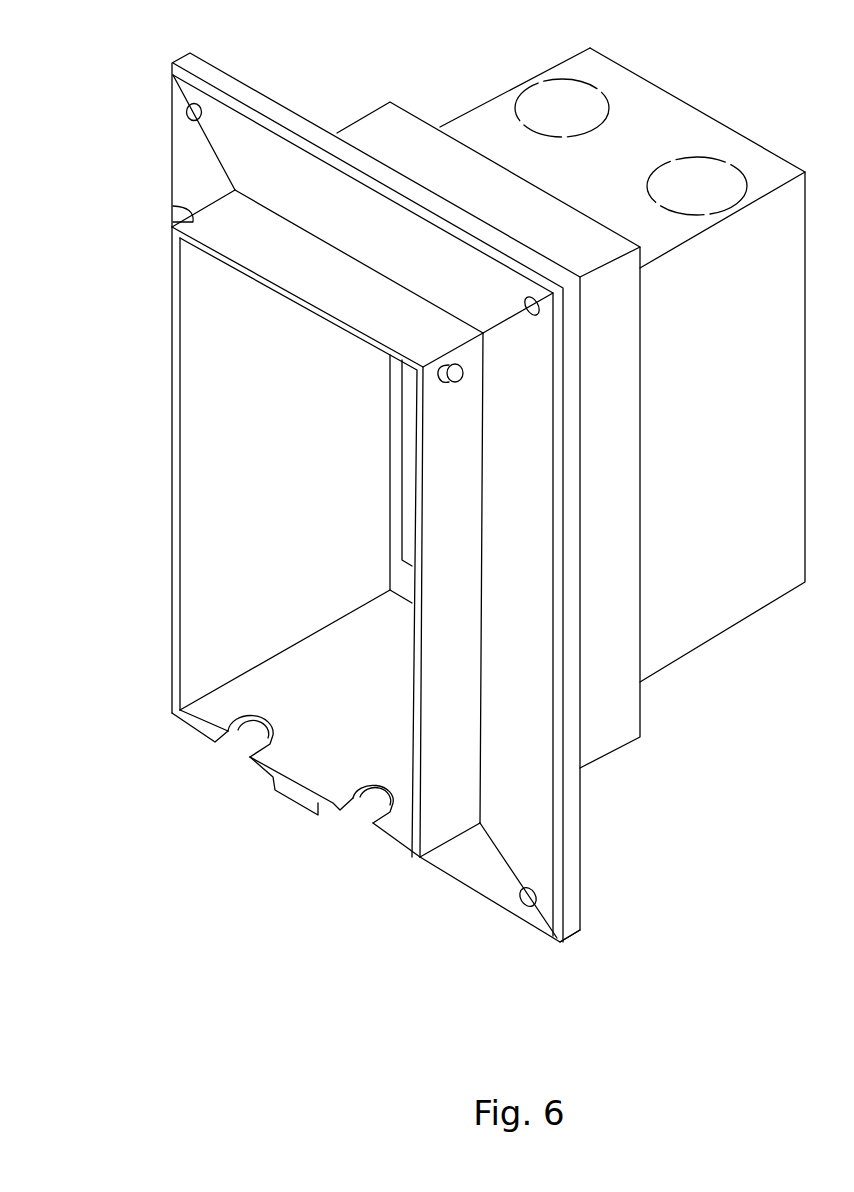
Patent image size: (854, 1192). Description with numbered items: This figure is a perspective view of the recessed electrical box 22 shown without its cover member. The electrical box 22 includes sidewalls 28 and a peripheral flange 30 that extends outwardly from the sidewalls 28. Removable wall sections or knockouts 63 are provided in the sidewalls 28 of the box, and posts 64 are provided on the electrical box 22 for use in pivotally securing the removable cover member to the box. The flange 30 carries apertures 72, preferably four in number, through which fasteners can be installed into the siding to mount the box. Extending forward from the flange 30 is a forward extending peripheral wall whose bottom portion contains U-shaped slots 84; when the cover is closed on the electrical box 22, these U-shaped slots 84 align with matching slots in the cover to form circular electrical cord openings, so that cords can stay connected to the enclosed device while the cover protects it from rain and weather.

The electrical box 22 is at (97, 136).
The sidewalls 28 is at (701, 412).
The peripheral flange 30 is at (502, 577).
The knockouts 63 is at (553, 117).
The posts 64 is at (174, 213).
The apertures 72 is at (196, 104).
The U-shaped slots 84 is at (242, 744).